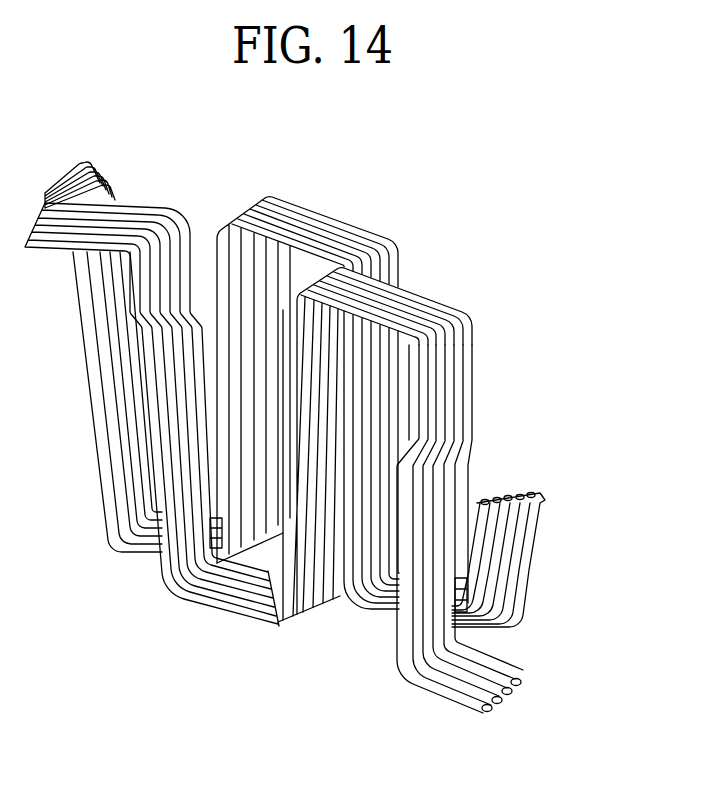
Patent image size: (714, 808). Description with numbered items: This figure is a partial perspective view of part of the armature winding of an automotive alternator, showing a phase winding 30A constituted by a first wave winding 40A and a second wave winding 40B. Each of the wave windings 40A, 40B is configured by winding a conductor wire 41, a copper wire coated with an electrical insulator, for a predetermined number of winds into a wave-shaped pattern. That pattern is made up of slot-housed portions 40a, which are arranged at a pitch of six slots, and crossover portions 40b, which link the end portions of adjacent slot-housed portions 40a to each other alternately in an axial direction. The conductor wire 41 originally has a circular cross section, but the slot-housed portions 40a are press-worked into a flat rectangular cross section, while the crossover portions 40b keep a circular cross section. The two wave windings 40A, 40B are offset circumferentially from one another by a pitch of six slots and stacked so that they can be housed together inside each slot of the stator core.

The phase winding 30A is at (221, 126).
The first wave winding 40A is at (366, 219).
The second wave winding 40B is at (411, 273).
The crossover portion 40b is at (425, 291).
The conductor wire 41 is at (470, 353).
The slot-housed portion 40a is at (468, 441).